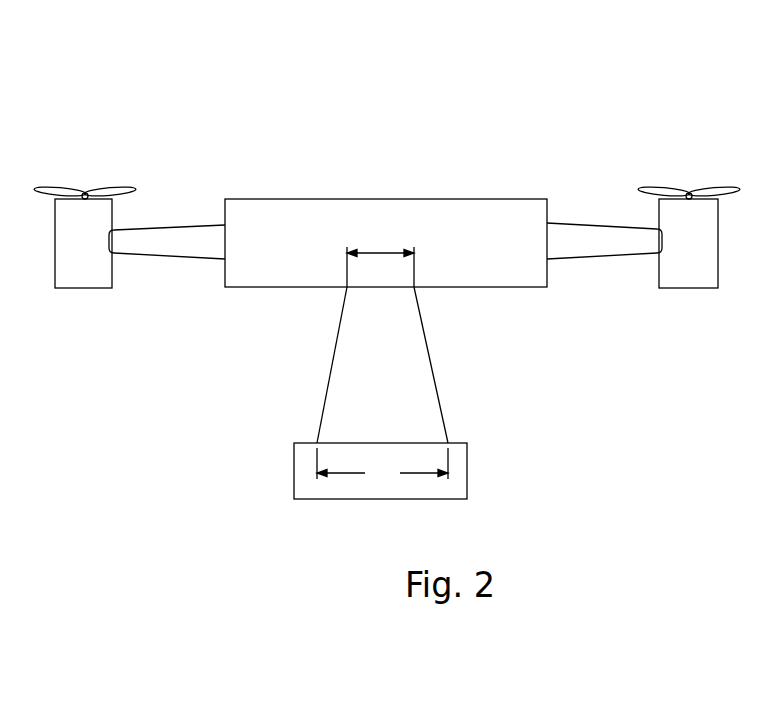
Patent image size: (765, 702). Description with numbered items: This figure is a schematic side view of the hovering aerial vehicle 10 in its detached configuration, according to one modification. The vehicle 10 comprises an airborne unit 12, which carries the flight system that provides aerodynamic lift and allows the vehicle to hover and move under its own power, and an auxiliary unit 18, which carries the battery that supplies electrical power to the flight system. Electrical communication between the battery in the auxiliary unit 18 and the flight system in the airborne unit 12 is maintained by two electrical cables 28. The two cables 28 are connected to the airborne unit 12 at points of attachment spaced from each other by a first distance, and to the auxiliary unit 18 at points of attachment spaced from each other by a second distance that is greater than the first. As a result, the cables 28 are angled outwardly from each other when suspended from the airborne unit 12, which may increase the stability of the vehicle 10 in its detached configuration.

The hovering aerial vehicle 10 is at (525, 108).
The airborne unit 12 is at (488, 199).
The electrical cables 28 is at (323, 398).
The auxiliary unit 18 is at (467, 472).